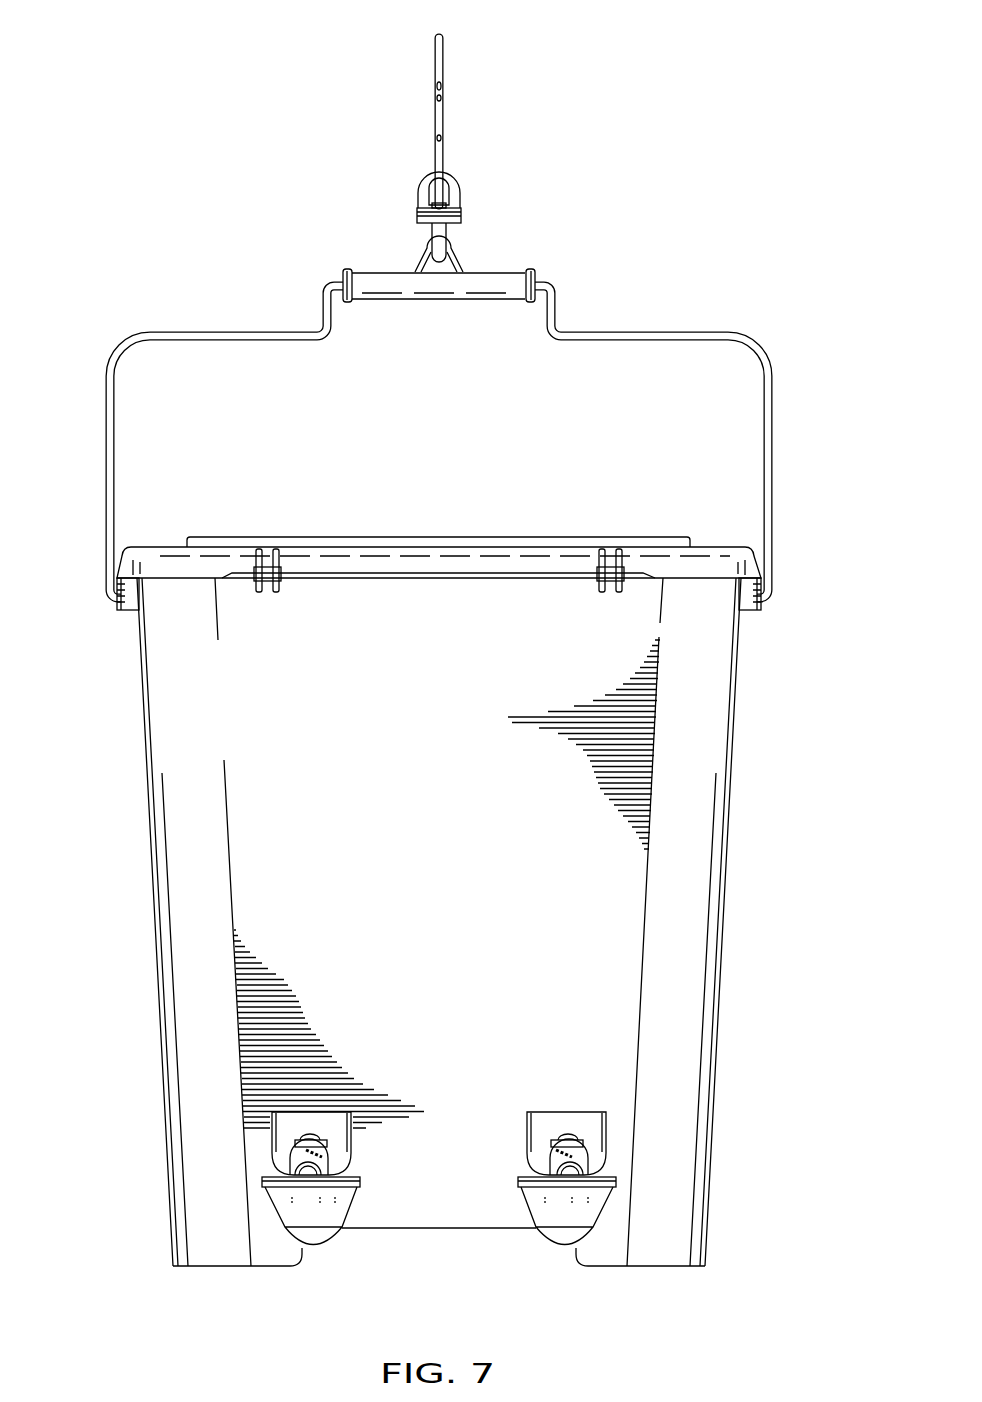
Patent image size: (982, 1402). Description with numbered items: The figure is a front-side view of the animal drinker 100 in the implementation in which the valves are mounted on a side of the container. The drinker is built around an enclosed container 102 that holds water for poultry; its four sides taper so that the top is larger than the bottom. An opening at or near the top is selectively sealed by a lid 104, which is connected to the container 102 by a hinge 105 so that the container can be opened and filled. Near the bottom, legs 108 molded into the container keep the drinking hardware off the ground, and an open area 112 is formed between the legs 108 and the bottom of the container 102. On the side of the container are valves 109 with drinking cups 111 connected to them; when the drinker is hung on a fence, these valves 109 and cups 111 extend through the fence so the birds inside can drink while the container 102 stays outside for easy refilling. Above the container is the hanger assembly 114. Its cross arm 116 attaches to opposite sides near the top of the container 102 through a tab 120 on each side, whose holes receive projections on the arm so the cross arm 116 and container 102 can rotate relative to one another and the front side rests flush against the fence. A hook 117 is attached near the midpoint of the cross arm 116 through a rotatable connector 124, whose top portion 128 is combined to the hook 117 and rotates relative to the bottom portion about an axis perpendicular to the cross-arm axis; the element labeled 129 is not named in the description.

The animal drinker 100 is at (702, 160).
The container 102 is at (712, 755).
The lid 104 is at (648, 562).
The hinge 105 is at (600, 560).
The legs 108 is at (213, 1258).
The valves 109 is at (326, 1163).
The drinking cups 111 is at (330, 1222).
The open area 112 is at (500, 1252).
The hanger assembly 114 is at (537, 112).
The cross arm 116 is at (625, 334).
The hook 117 is at (437, 56).
The tab 120 is at (112, 605).
The rotatable connector 124 is at (548, 172).
The top portion 128 is at (453, 193).
The swivel plate 129 is at (440, 238).